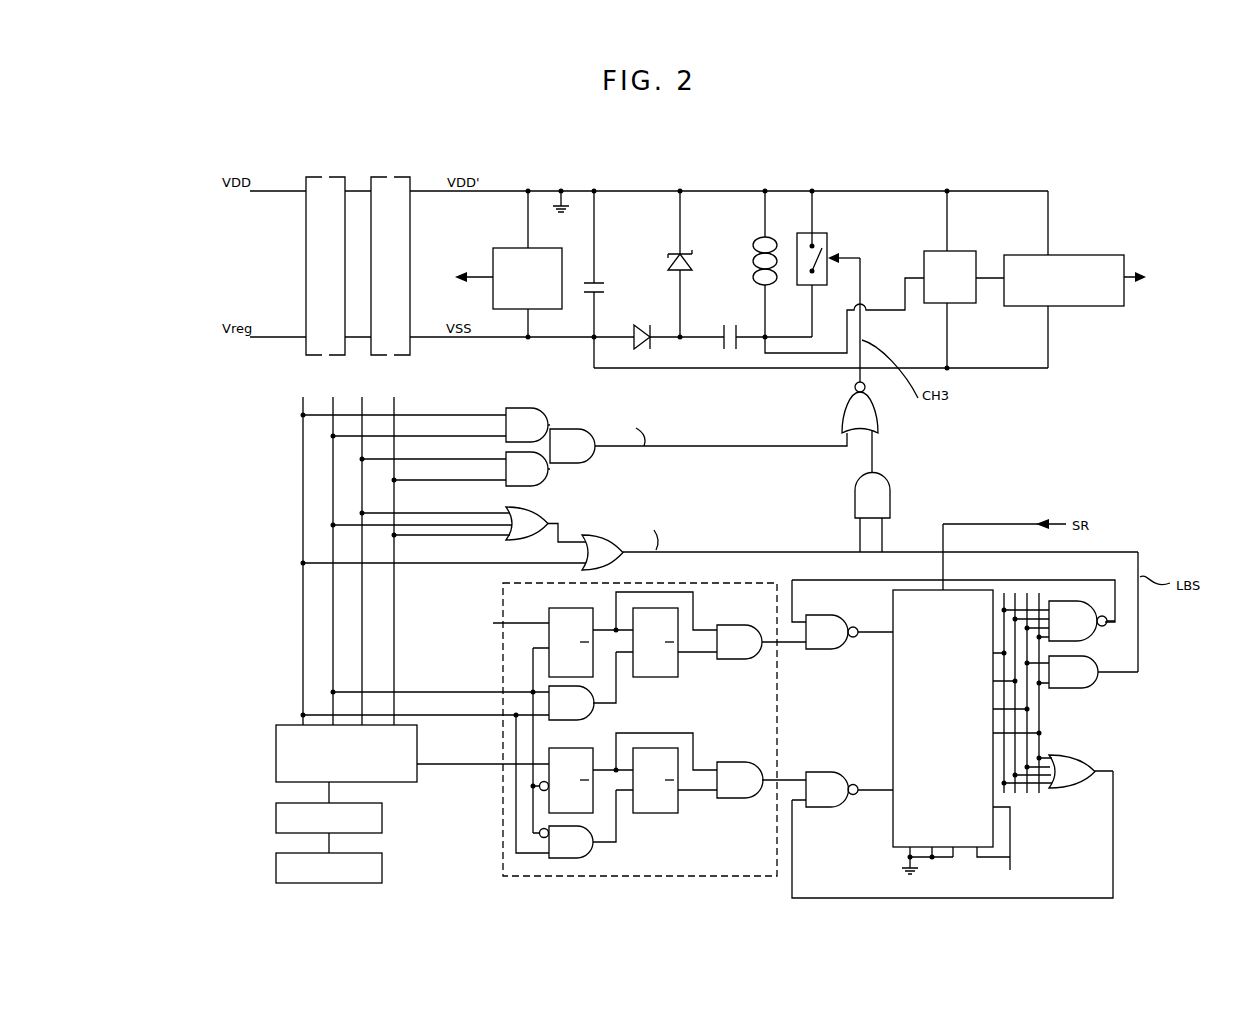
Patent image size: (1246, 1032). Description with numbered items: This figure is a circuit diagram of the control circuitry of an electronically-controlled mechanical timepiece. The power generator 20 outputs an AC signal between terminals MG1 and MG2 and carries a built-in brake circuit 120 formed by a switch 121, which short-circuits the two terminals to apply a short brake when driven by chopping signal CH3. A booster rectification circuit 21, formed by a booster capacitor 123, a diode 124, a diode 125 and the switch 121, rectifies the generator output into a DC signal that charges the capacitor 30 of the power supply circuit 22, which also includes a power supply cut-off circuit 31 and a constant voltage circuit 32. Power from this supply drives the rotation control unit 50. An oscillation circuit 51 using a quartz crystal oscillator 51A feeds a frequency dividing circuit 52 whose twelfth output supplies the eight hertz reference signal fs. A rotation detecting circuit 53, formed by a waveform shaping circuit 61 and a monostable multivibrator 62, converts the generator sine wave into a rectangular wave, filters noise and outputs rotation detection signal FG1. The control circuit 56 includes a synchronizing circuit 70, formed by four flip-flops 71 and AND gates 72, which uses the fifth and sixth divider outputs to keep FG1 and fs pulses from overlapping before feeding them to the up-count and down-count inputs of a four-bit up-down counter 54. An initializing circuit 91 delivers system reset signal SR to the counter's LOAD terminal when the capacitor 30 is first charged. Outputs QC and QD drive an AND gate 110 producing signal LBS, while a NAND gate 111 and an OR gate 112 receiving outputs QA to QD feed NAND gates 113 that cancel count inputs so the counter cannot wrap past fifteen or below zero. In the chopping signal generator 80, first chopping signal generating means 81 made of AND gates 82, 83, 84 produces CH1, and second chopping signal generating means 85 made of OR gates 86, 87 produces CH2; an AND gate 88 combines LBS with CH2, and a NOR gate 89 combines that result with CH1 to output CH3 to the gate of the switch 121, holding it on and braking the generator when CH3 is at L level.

The power generator 20 is at (752, 260).
The booster rectification circuit 21 is at (704, 263).
The power supply circuit 22 is at (388, 231).
The capacitor 30 is at (588, 283).
The power supply cut-off circuit 31 is at (389, 172).
The constant voltage circuit 32 is at (325, 172).
The rotation control unit 50 is at (1049, 456).
The oscillation circuit 51 is at (276, 818).
The quartz crystal oscillator 51A is at (276, 867).
The frequency dividing circuit 52 is at (276, 753).
The rotation detecting circuit 53 is at (1050, 279).
The up-down counter 54 is at (893, 731).
The control circuit 56 is at (539, 750).
The waveform shaping circuit 61 is at (966, 303).
The monostable multivibrator 62 is at (1068, 306).
The synchronizing circuit 70 is at (660, 877).
The flip-flop 71 is at (658, 677).
The AND gate 72 is at (562, 720).
The chopping signal generator 80 is at (720, 480).
The first chopping signal generating means 81 is at (574, 437).
The AND gate 82 is at (548, 414).
The AND gate 83 is at (548, 478).
The AND gate 84 is at (590, 430).
The second chopping signal generating means 85 is at (720, 530).
The OR gate 86 is at (547, 517).
The OR gate 87 is at (623, 558).
The AND gate 88 is at (890, 500).
The NOR gate 89 is at (878, 420).
The initializing circuit 91 is at (510, 248).
The AND gate 110 is at (1090, 688).
The NAND gate 111 is at (1082, 602).
The OR gate 112 is at (1065, 788).
The NAND gate 113 is at (820, 649).
The brake circuit 120 is at (859, 238).
The switch 121 is at (830, 251).
The booster capacitor 123 is at (724, 326).
The diode 124 is at (645, 345).
The diode 125 is at (672, 262).